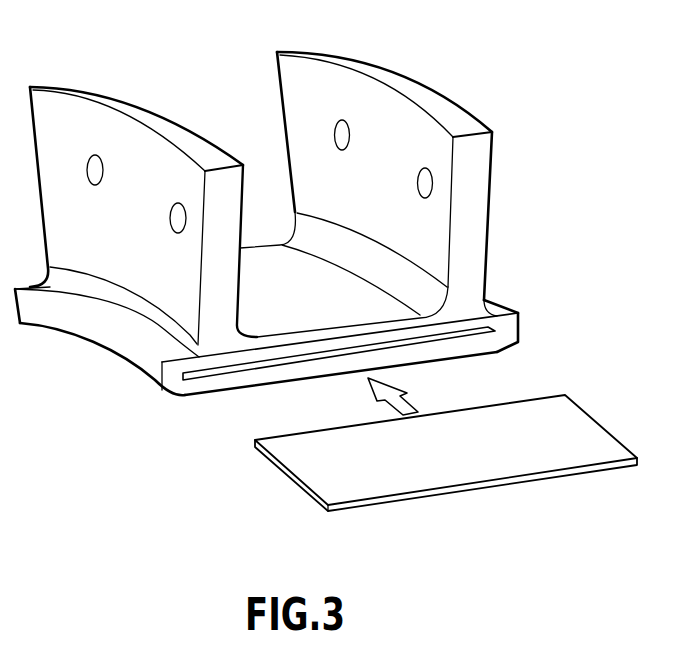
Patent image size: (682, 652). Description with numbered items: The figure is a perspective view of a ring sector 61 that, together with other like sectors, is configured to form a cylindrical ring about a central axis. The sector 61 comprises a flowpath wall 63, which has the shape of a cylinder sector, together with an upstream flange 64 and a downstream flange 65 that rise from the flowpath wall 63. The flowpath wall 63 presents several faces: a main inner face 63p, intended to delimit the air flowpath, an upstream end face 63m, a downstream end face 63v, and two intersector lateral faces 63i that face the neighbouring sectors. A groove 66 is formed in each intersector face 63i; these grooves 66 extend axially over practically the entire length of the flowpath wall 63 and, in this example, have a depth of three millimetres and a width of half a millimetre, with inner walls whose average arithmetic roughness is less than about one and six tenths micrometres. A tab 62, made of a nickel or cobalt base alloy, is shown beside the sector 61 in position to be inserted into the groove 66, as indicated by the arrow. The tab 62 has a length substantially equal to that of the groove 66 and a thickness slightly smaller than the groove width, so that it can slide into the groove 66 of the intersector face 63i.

The sector 61 is at (296, 231).
The tab 62 is at (593, 435).
The flowpath wall 63 is at (296, 323).
The upstream end face 63m is at (147, 367).
The main inner face 63p is at (213, 393).
The intersector lateral face 63i is at (513, 317).
The downstream end face 63v is at (519, 325).
The upstream flange 64 is at (128, 110).
The downstream flange 65 is at (395, 83).
The groove 66 is at (420, 343).